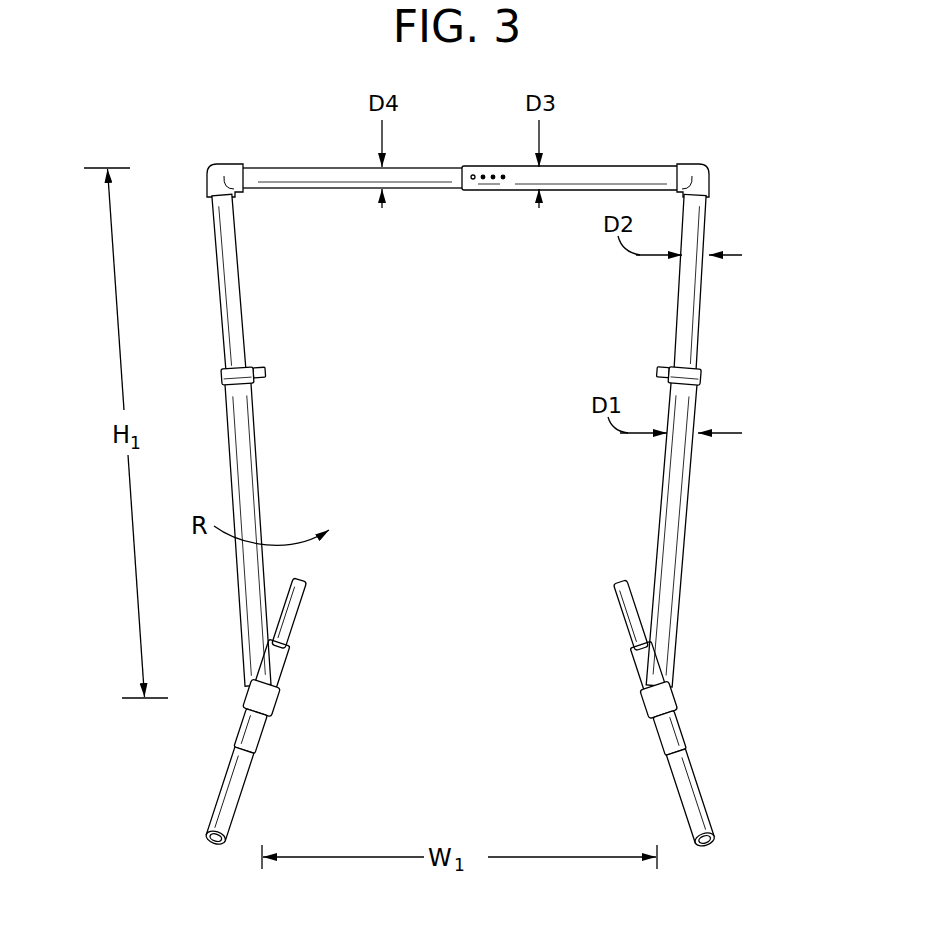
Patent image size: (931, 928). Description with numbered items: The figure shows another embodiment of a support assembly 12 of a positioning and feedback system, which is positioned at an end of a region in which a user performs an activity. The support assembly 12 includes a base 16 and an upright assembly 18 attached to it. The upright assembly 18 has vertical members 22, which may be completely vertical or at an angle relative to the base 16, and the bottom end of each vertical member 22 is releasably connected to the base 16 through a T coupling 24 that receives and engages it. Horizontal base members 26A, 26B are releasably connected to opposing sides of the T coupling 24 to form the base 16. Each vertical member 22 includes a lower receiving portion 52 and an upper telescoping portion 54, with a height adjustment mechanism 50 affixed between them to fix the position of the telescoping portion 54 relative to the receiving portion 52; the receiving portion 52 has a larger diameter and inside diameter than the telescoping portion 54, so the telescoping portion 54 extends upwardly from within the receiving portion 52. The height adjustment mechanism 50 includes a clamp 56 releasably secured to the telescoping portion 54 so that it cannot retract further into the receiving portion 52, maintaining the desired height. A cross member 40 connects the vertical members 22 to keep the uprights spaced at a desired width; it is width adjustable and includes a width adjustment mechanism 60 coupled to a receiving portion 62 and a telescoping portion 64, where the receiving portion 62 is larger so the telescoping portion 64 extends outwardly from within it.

The first support assembly 12 is at (198, 157).
The base 16 is at (199, 767).
The upright assembly 18 is at (626, 340).
The vertical member 22 is at (252, 458).
The T coupling 24 is at (273, 705).
The horizontal base member 26A is at (250, 788).
The horizontal base member 26B is at (297, 627).
The cross member 40 is at (259, 165).
The height adjustment mechanism 50 is at (729, 361).
The receiving portion 52 is at (228, 420).
The telescoping portion 54 is at (224, 304).
The clamp 56 is at (258, 370).
The width adjustment mechanism 60 is at (466, 107).
The receiving portion 62 is at (627, 166).
The telescoping portion 64 is at (327, 167).